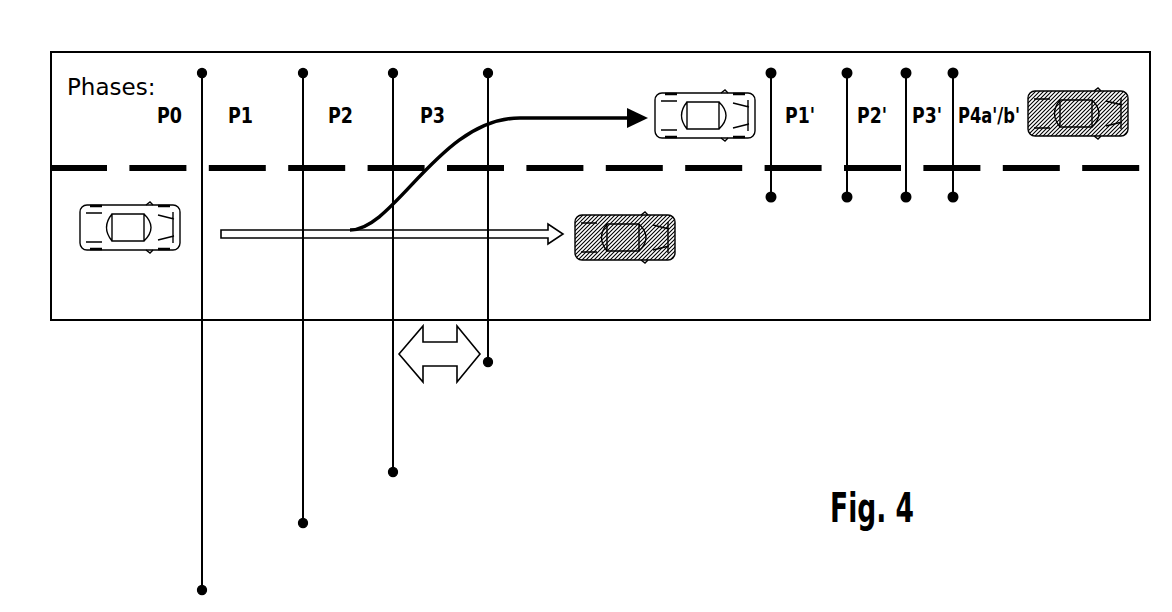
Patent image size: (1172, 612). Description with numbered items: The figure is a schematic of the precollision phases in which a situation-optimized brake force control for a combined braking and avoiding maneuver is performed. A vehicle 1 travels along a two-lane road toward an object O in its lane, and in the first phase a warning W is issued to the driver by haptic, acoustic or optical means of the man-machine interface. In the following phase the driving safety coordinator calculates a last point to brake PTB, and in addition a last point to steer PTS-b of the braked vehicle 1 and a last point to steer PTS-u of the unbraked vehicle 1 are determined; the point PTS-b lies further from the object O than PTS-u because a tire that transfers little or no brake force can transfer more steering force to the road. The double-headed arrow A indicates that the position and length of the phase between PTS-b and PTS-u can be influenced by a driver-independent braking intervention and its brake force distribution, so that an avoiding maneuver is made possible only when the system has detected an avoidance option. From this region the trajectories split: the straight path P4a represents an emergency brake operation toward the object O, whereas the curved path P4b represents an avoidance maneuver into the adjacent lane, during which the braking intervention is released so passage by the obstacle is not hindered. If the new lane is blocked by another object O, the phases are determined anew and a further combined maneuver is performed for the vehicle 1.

The vehicle 1 is at (133, 248).
The object O is at (625, 257).
The warning W is at (216, 336).
The last point to brake PTB is at (327, 303).
The last point to steer of the braked vehicle PTS-b is at (427, 277).
The last point to steer of the unbraked vehicle PTS-u is at (523, 222).
The double-headed arrow A is at (439, 354).
The precollision phase P4a is at (392, 218).
The precollision phase P4b is at (499, 156).